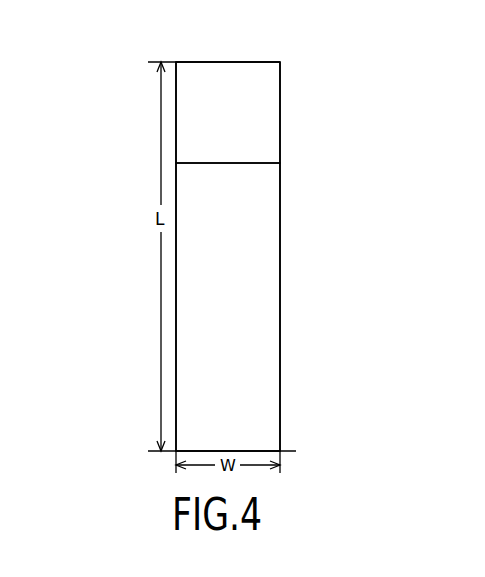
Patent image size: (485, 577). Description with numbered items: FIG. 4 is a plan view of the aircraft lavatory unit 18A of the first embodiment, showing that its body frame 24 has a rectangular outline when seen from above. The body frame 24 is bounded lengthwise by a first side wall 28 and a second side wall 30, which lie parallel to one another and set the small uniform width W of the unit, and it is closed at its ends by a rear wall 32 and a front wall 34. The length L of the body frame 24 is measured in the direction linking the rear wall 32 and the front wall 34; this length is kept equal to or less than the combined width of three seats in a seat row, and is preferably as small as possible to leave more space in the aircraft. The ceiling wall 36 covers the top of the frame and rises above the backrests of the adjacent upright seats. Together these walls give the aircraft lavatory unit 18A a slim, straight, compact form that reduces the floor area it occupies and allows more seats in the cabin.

The aircraft lavatory unit 18A is at (118, 92).
The body frame 24 is at (293, 73).
The first side wall 28 is at (283, 283).
The second side wall 30 is at (176, 270).
The rear wall 32 is at (217, 75).
The front wall 34 is at (296, 451).
The ceiling wall 36 is at (243, 185).